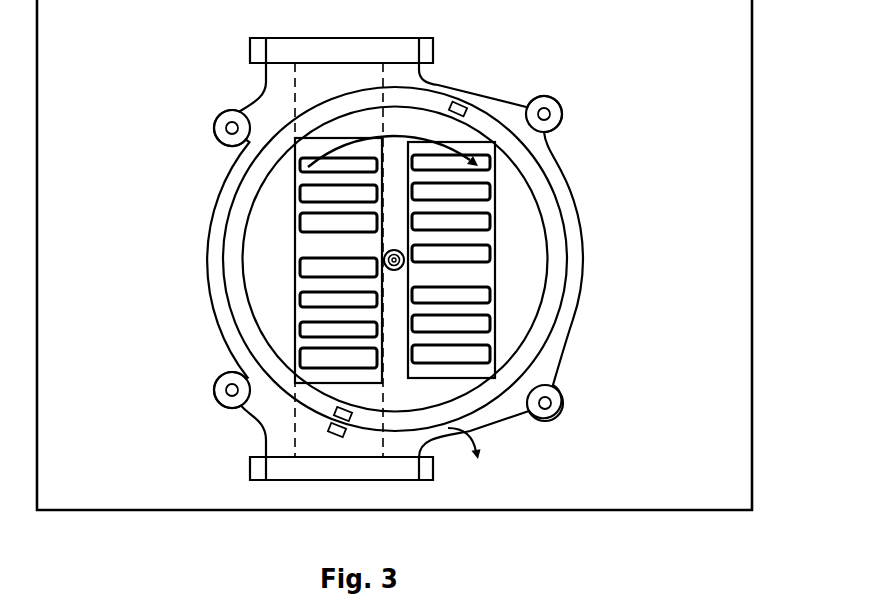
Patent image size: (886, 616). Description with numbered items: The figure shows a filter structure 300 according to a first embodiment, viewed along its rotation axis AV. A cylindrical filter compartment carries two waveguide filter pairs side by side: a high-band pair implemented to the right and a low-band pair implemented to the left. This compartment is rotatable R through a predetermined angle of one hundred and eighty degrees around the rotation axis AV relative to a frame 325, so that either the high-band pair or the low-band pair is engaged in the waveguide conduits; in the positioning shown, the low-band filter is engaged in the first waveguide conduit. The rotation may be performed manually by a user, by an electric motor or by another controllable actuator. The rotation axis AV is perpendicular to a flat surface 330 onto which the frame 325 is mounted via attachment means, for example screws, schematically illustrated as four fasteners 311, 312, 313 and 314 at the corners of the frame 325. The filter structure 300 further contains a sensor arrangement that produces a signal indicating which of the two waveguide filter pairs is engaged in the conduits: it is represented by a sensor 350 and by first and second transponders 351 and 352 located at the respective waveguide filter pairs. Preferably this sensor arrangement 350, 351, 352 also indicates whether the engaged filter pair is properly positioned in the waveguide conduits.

The filter structure 300 is at (172, 316).
The attachment means 311 is at (232, 128).
The attachment means 312 is at (544, 114).
The attachment means 313 is at (545, 403).
The attachment means 314 is at (232, 390).
The frame 325 is at (560, 193).
The flat surface 330 is at (595, 480).
The sensor 350 is at (329, 432).
The first transponder 351 is at (334, 416).
The second transponder 352 is at (459, 106).
The rotation axis AV is at (398, 262).
The rotation R is at (393, 164).